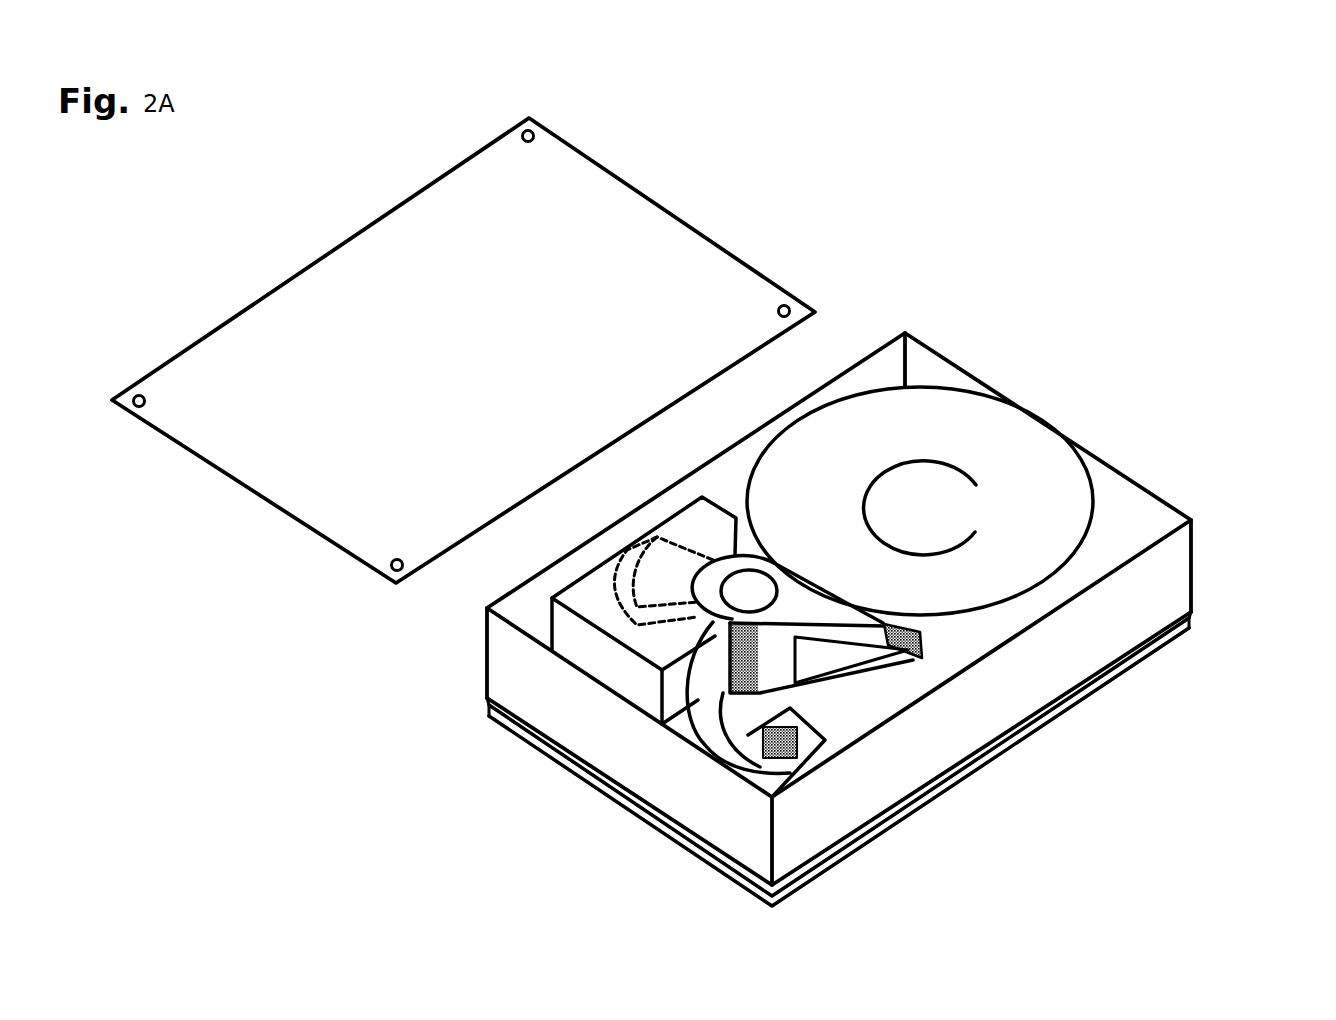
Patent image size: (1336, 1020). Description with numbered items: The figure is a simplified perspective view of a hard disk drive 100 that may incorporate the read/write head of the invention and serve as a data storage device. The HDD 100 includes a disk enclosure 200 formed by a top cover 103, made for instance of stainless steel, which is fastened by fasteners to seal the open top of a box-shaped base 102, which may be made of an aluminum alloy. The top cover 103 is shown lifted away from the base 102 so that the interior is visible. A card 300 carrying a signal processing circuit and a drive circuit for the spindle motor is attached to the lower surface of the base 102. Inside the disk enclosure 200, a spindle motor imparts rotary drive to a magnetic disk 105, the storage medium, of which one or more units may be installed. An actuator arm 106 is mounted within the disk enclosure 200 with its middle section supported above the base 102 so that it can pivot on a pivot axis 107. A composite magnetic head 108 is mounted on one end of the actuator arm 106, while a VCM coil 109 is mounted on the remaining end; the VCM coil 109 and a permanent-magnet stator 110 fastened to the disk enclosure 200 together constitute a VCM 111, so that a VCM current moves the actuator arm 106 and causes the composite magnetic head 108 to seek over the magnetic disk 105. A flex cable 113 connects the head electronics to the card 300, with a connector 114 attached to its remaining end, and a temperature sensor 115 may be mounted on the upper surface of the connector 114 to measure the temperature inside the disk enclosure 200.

The hard disk drive 100 is at (869, 567).
The base 102 is at (487, 650).
The top cover 103 is at (370, 570).
The magnetic disk 105 is at (1037, 443).
The actuator arm 106 is at (929, 527).
The pivot axis 107 is at (749, 590).
The composite magnetic head 108 is at (922, 632).
The VCM coil 109 is at (620, 560).
The stator 110 is at (607, 590).
The VCM 111 is at (557, 463).
The flex cable 113 is at (748, 762).
The connector 114 is at (825, 740).
The temperature sensor 115 is at (780, 760).
The disk enclosure 200 is at (463, 433).
The card 300 is at (1150, 657).